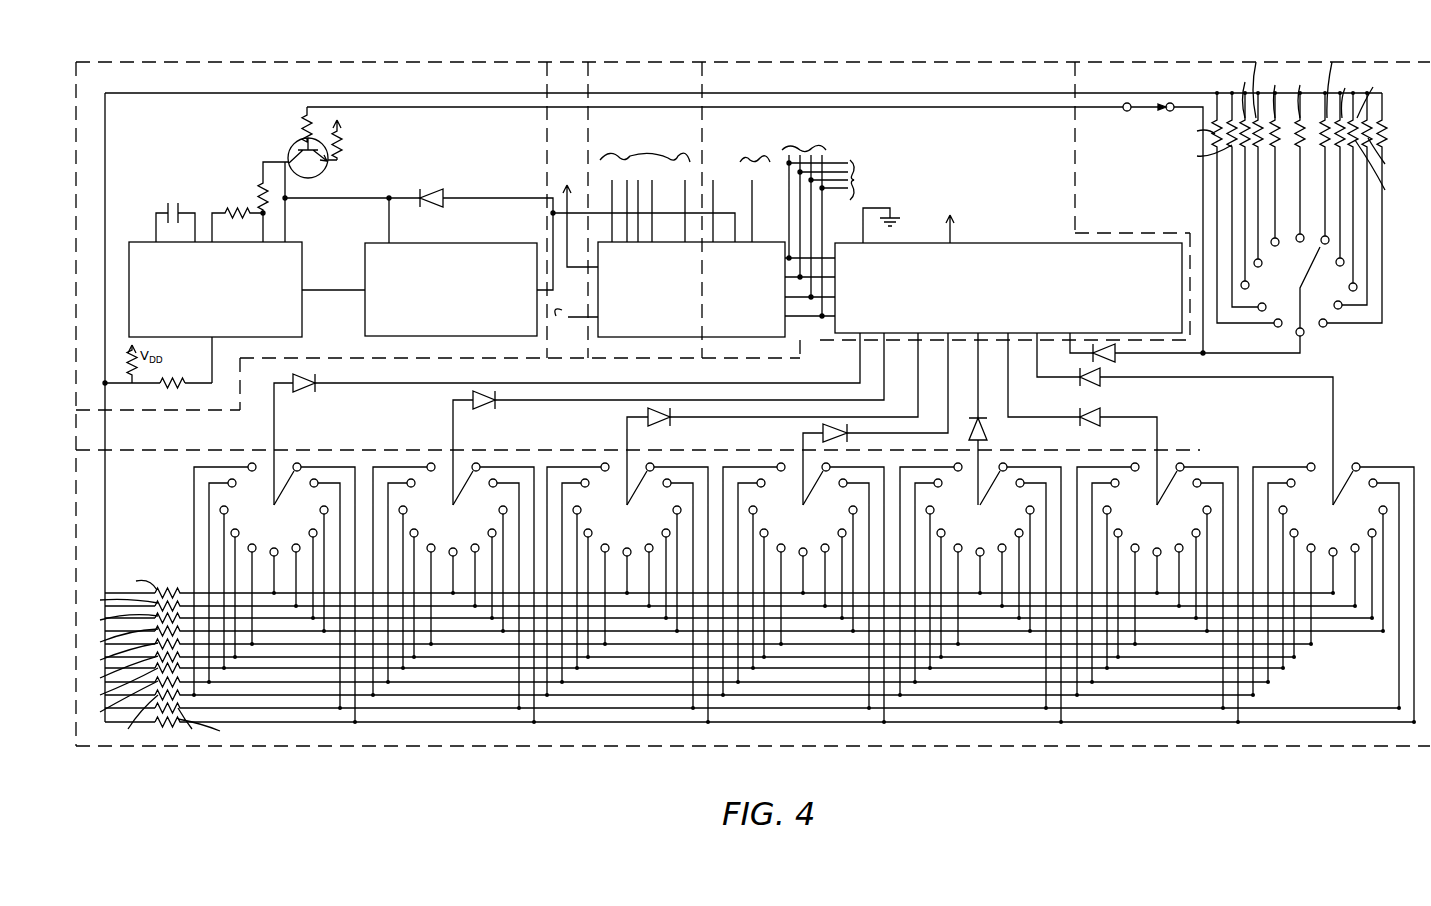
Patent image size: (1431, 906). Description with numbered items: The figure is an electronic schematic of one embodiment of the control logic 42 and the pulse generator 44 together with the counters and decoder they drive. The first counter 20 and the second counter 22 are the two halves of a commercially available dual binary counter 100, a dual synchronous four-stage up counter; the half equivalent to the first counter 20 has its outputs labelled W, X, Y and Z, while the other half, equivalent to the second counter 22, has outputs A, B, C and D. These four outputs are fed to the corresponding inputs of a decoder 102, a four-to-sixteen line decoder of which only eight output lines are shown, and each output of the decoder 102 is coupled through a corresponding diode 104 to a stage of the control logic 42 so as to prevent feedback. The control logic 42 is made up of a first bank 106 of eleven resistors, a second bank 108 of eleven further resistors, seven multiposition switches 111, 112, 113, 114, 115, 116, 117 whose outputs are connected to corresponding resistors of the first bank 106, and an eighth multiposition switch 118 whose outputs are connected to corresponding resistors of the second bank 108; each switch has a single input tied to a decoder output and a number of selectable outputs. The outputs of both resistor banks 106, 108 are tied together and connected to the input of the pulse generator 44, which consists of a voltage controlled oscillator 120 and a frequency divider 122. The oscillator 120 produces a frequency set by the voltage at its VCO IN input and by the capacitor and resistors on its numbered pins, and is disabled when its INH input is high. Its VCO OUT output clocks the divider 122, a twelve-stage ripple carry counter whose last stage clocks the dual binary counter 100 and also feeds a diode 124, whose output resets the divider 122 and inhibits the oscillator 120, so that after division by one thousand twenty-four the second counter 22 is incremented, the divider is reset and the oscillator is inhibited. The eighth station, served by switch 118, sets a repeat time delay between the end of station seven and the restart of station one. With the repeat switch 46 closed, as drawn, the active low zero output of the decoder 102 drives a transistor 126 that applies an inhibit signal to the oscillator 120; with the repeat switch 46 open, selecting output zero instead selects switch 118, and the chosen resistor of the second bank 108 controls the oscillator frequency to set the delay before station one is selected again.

The first counter 20 is at (636, 78).
The second counter 22 is at (754, 80).
The control logic 42 is at (188, 745).
The pulse generator 44 is at (230, 72).
The repeat switch 46 is at (1178, 82).
The dual binary counter 100 is at (786, 336).
The decoder 102 is at (1046, 245).
The diodes 104 is at (318, 386).
The first bank of resistors 106 is at (170, 585).
The second bank of resistors 108 is at (1392, 136).
The switch 111 is at (274, 575).
The switch 112 is at (453, 575).
The switch 113 is at (627, 575).
The switch 114 is at (803, 572).
The switch 115 is at (980, 575).
The switch 116 is at (1157, 575).
The switch 117 is at (1333, 575).
The multiposition switch 118 is at (1300, 286).
The voltage controlled oscillator 120 is at (316, 338).
The frequency divider 122 is at (455, 240).
The diode 124 is at (433, 190).
The transistor 126 is at (290, 148).